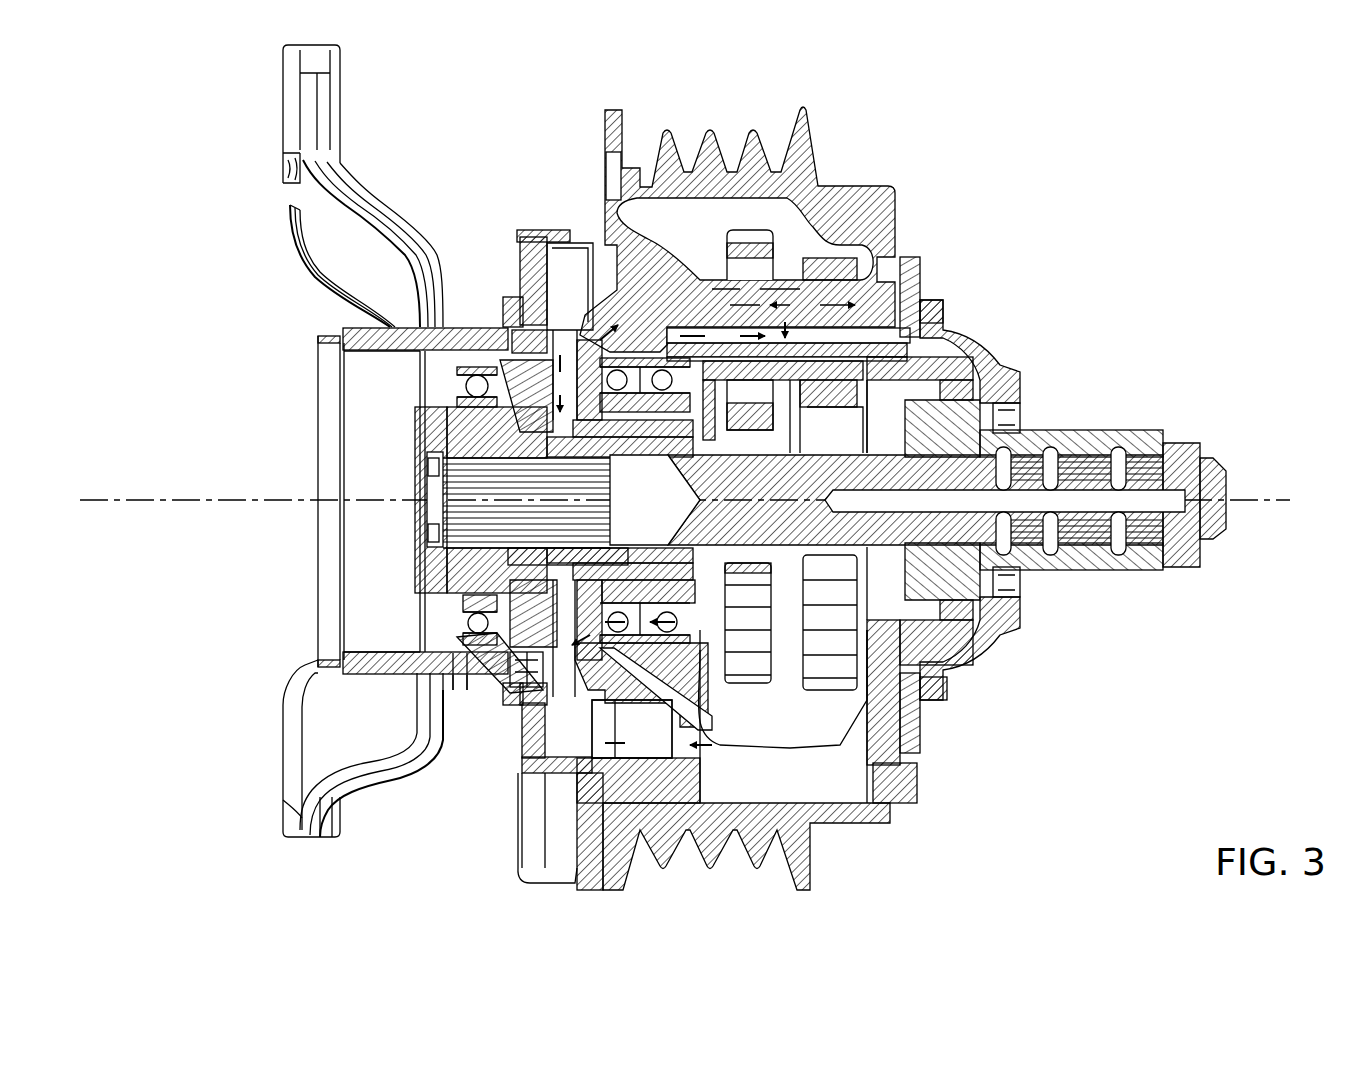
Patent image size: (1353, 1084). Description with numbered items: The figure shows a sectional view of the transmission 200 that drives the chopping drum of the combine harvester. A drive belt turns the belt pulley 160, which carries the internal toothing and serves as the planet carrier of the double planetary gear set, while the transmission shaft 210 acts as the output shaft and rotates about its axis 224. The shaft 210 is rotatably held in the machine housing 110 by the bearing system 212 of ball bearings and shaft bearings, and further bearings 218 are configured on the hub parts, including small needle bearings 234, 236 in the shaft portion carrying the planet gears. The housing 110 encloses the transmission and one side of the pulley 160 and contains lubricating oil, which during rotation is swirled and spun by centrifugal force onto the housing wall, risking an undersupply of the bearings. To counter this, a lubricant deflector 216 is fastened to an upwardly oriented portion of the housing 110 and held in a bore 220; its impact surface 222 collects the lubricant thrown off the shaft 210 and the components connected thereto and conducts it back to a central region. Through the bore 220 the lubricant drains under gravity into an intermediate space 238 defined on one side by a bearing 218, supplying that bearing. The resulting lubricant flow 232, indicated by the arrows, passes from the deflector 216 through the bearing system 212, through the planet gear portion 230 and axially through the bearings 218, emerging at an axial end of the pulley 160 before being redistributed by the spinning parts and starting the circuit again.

The machine housing 110 is at (912, 262).
The belt pulley 160 is at (880, 190).
The drive unit assembly 200 is at (1069, 301).
The transmission shaft 210 is at (1018, 540).
The bearing system 212 is at (458, 633).
The lubricant deflector 216 is at (570, 293).
The bearing 218 is at (460, 366).
The bore 220 is at (480, 378).
The impact surface 222 is at (567, 262).
The axis of rotation 224 is at (150, 512).
The clutch assembly 230 is at (1003, 895).
The lubricant flow 232 is at (688, 745).
The roller bearing 234 is at (831, 632).
The needle bearing 236 is at (705, 680).
The intermediate space 238 is at (455, 430).